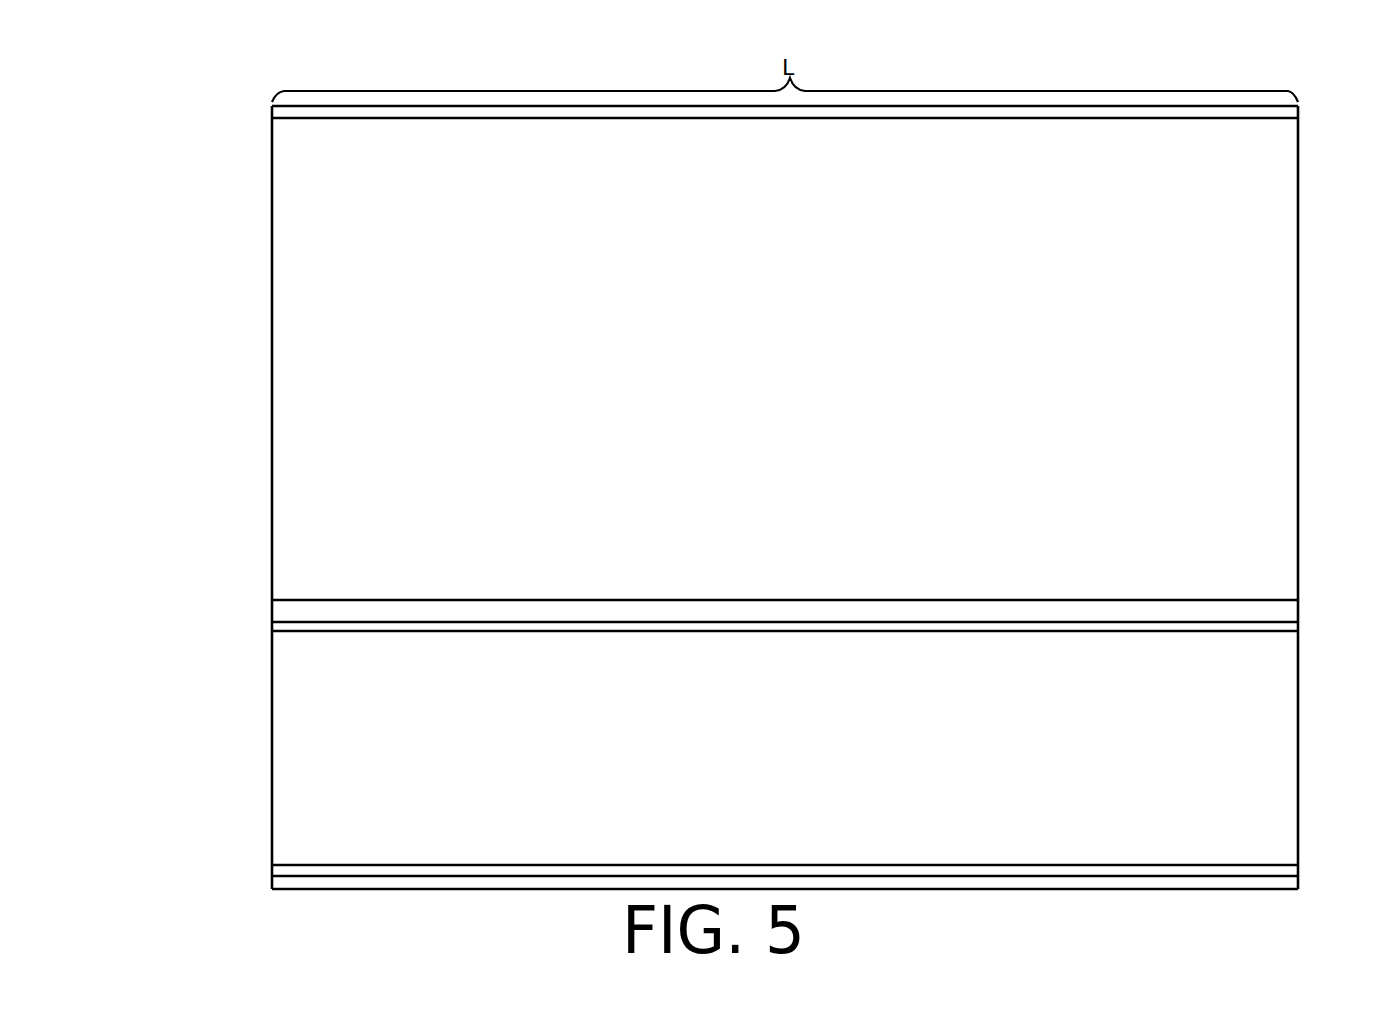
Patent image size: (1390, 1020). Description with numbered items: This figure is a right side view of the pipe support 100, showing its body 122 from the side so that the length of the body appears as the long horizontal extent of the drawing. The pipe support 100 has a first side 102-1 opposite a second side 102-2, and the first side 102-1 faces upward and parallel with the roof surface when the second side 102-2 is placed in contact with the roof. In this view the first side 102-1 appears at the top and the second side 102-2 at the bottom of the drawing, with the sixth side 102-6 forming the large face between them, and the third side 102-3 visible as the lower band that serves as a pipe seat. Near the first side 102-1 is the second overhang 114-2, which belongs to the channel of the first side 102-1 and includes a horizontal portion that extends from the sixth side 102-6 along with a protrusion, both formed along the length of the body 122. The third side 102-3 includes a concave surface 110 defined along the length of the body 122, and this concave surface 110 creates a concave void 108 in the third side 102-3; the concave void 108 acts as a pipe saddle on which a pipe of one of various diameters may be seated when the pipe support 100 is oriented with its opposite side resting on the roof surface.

The pipe support 100 is at (87, 78).
The first side 102-1 is at (1260, 106).
The second side 102-2 is at (1000, 889).
The third side 102-3 is at (384, 712).
The sixth side 102-6 is at (383, 420).
The concave void 108 is at (432, 761).
The concave surface 110 is at (271, 810).
The second overhang 114-2 is at (323, 113).
The body 122 is at (212, 492).